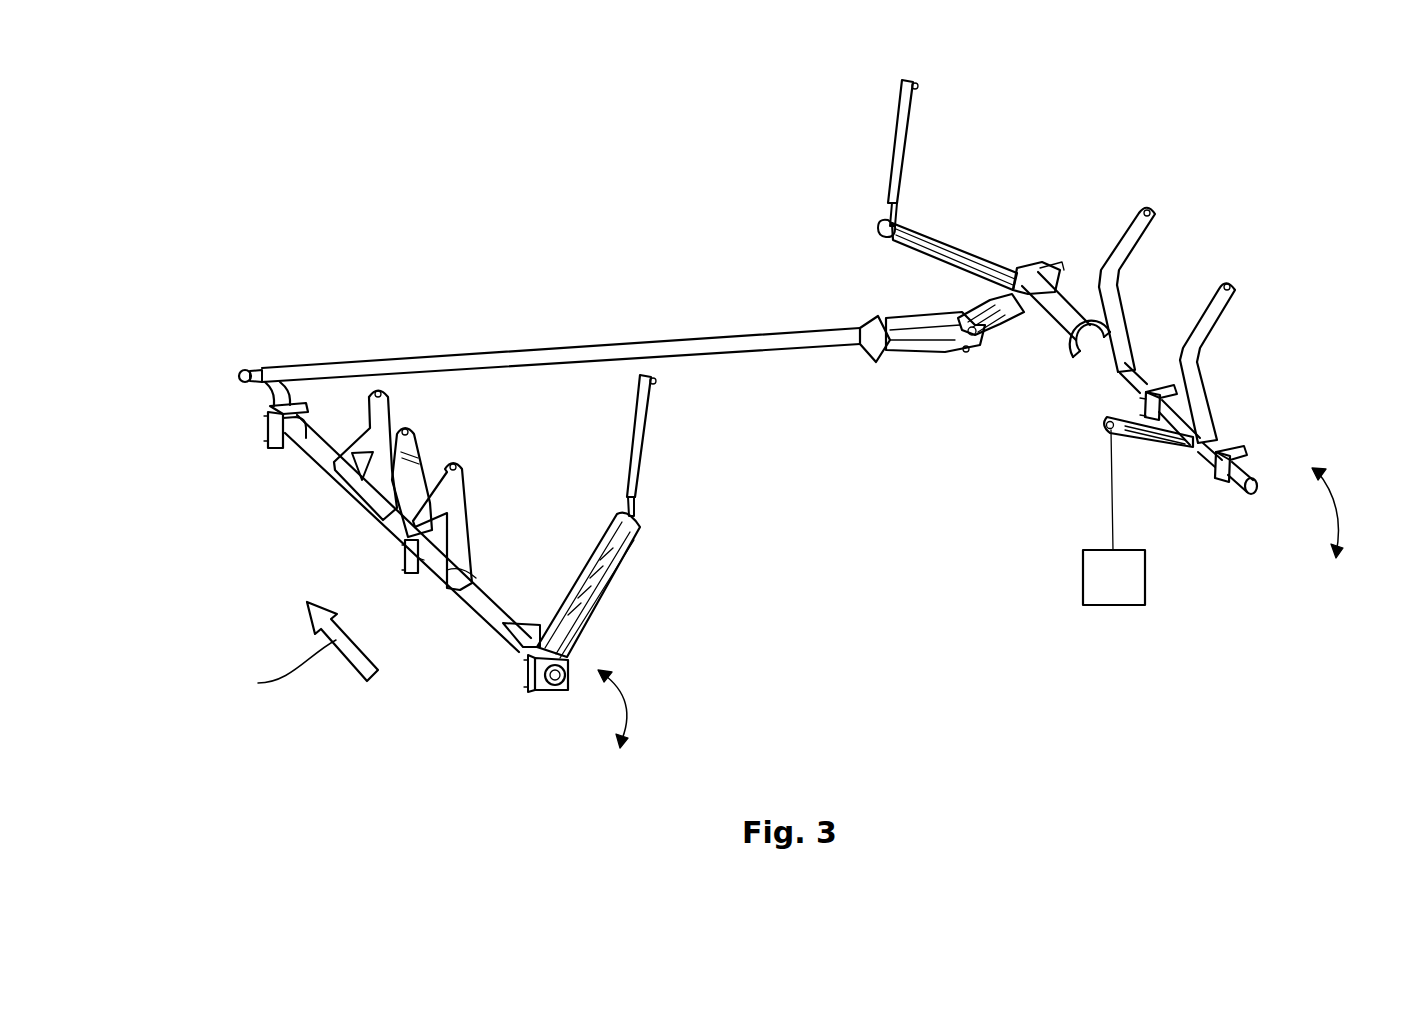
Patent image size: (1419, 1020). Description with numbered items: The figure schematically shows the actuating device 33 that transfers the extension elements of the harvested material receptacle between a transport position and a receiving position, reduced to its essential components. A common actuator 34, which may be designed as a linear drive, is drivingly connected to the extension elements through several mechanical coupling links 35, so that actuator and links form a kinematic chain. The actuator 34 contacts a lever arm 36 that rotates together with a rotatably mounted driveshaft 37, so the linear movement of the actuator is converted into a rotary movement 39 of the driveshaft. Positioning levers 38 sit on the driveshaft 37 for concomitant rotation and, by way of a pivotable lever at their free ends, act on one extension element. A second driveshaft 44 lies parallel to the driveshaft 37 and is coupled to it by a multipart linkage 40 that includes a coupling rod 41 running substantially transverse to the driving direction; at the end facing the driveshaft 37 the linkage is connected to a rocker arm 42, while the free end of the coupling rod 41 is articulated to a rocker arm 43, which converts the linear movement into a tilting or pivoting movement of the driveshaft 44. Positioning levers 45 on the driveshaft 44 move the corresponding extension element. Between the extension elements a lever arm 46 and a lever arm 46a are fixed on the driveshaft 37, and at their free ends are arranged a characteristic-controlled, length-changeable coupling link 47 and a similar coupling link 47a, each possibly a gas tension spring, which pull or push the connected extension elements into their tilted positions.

The actuating device 33 is at (404, 162).
The actuator 34 is at (1066, 567).
The coupling links 35 is at (732, 386).
The lever arm 36 is at (1160, 438).
The driveshaft 37 is at (1248, 496).
The positioning levers 38 is at (1220, 284).
The rotary movement 39 is at (630, 705).
The multipart linkage 40 is at (776, 316).
The coupling rod 41 is at (612, 350).
The rocker arm 42 is at (1003, 336).
The rocker arm 43 is at (267, 400).
The driveshaft 44 is at (288, 455).
The positioning levers 45 is at (385, 412).
The lever arm 46 is at (938, 249).
The lever arm 46a is at (640, 527).
The coupling link 47 is at (897, 139).
The coupling link 47a is at (641, 432).